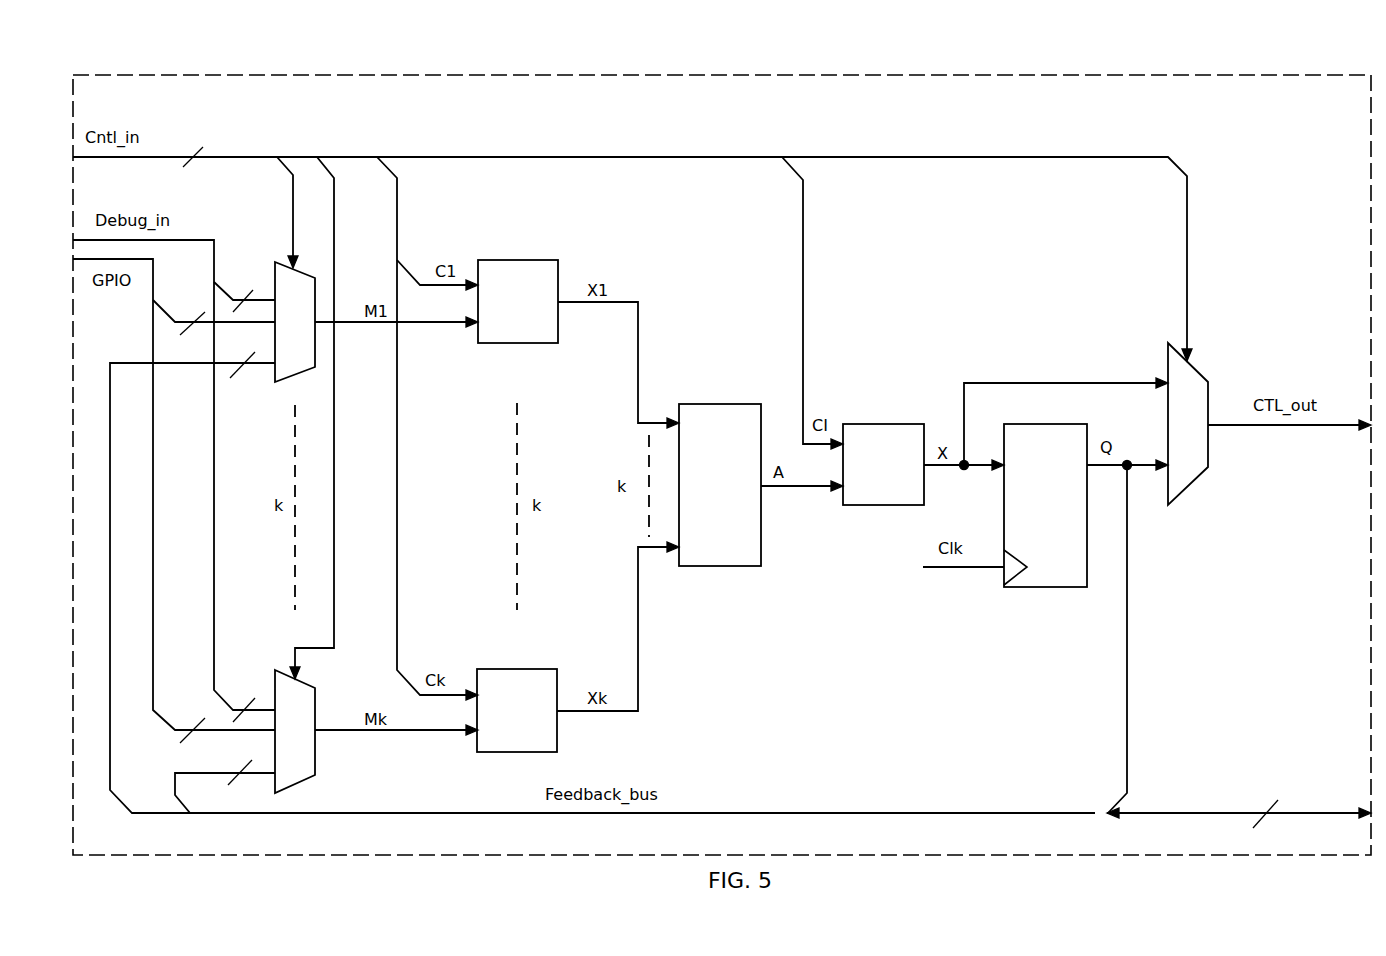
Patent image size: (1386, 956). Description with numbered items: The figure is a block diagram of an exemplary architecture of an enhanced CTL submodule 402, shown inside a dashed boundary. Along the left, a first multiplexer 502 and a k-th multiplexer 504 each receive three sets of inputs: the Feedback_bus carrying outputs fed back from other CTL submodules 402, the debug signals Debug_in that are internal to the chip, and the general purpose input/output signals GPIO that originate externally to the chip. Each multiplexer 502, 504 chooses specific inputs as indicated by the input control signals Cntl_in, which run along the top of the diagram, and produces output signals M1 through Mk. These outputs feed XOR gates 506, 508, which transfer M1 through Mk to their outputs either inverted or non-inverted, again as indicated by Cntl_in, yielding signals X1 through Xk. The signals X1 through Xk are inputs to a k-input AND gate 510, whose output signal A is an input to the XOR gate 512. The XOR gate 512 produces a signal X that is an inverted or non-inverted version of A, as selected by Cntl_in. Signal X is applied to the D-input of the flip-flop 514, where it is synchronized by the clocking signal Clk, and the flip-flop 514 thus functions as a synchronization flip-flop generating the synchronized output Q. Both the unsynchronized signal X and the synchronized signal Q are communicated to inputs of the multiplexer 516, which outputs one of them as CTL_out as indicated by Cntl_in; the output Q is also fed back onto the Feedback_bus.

The CTL submodule 402 is at (123, 75).
The first multiplexer 502 is at (277, 262).
The k-th multiplexer 504 is at (277, 670).
The first XOR gate 506 is at (494, 260).
The k-th XOR gate 508 is at (494, 669).
The AND gate 510 is at (710, 404).
The XOR gate 512 is at (886, 424).
The flip-flop 514 is at (1040, 587).
The multiplexer 516 is at (1170, 344).